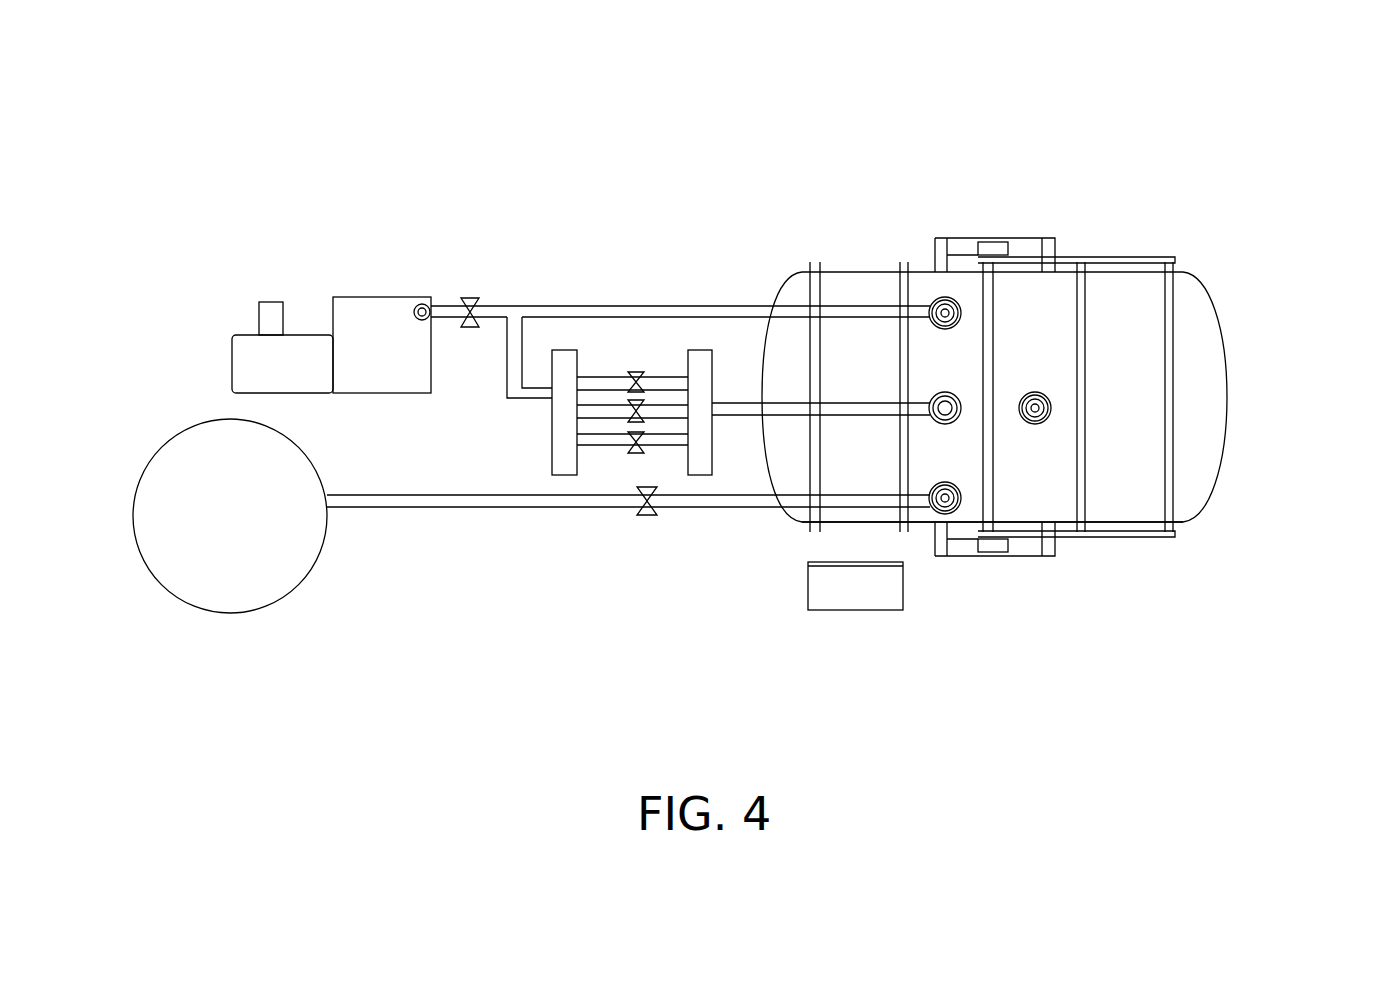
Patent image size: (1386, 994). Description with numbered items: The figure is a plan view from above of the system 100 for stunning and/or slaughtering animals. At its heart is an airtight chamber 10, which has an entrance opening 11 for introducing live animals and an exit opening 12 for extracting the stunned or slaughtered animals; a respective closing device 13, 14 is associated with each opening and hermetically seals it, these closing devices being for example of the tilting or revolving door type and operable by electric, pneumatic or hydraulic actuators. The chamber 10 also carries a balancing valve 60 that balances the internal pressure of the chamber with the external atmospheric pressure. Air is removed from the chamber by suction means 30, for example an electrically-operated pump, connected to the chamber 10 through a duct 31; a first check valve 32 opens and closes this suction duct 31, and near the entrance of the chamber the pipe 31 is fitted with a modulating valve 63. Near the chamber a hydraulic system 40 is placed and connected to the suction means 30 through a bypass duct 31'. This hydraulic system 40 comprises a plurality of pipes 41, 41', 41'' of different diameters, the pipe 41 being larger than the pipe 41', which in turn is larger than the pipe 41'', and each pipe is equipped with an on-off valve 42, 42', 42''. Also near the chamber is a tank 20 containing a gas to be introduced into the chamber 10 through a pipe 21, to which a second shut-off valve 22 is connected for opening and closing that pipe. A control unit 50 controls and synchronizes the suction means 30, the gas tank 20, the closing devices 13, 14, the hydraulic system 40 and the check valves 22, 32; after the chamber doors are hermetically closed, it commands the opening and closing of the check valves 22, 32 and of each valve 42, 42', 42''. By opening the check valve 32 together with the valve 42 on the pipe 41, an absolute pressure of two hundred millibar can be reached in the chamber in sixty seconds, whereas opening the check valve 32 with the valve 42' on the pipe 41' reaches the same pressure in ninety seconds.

The system 100 is at (310, 162).
The airtight chamber 10 is at (1122, 335).
The entrance opening 11 is at (1178, 258).
The exit opening 12 is at (812, 528).
The closing device 13 is at (1210, 391).
The closing device 14 is at (790, 293).
The tank 20 is at (242, 578).
The pipe 21 is at (387, 508).
The second shut-off valve 22 is at (647, 515).
The suction means 30 is at (362, 322).
The duct 31 is at (680, 244).
The bypass duct 31' is at (505, 385).
The first check valve 32 is at (470, 298).
The hydraulic system 40 is at (543, 443).
The pipe 41 is at (753, 320).
The pipe 41' is at (674, 479).
The pipe 41'' is at (646, 507).
The valve 42 is at (636, 303).
The valve 42' is at (602, 334).
The valve 42'' is at (607, 495).
The control unit 50 is at (855, 590).
The balancing valve 60 is at (1035, 425).
The modulating valve 63 is at (943, 300).